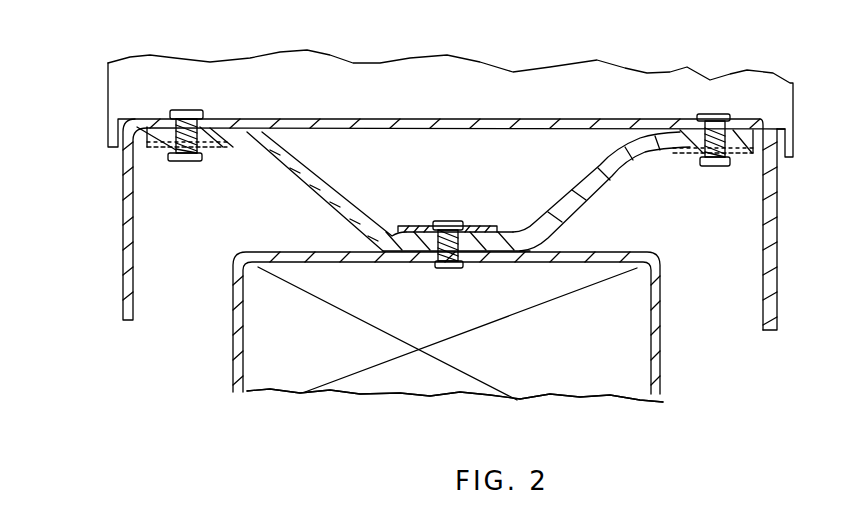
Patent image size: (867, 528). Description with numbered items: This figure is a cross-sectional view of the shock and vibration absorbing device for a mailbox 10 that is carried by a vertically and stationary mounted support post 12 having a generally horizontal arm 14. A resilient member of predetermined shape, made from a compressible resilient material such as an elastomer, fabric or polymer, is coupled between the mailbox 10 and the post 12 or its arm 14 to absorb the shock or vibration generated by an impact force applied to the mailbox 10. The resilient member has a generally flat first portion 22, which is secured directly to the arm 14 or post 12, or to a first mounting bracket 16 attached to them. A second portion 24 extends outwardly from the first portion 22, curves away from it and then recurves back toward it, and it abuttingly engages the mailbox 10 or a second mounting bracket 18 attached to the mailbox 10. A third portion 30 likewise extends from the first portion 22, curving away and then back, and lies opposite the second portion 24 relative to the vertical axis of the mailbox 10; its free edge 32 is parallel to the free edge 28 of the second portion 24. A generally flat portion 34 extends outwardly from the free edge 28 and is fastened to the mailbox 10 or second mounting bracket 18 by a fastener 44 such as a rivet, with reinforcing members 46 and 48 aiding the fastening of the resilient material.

The mailbox 10 is at (787, 82).
The support post 12 is at (287, 367).
The horizontal arm 14 is at (287, 367).
The first mounting bracket 16 is at (666, 306).
The second mounting bracket 18 is at (123, 213).
The first portion 22 is at (487, 243).
The second portion 24 is at (613, 173).
The free edge of second portion 28 is at (670, 152).
The third portion 30 is at (307, 188).
The free edge of third portion 32 is at (238, 147).
The flat portion 34 is at (150, 150).
The fastener 44 is at (722, 114).
The reinforcing member 46 is at (410, 227).
The reinforcing member 48 is at (215, 162).